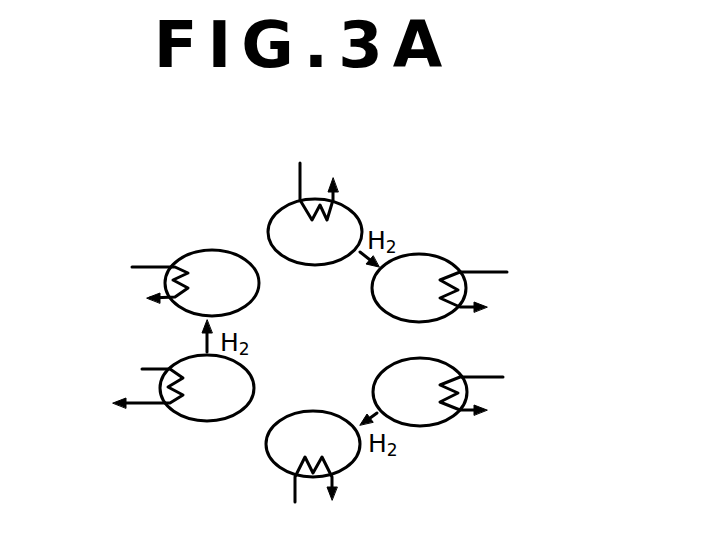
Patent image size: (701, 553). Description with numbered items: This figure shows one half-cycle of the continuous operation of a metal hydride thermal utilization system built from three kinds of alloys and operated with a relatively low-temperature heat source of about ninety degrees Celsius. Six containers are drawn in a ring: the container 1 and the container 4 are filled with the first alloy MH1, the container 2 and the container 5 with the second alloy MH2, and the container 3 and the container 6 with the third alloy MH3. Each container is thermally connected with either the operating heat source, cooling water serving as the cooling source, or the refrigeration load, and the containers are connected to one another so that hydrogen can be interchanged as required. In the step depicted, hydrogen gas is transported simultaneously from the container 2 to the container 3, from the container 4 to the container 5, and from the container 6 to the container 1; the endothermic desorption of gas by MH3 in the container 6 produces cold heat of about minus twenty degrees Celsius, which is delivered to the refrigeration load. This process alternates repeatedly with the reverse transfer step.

The container 1 is at (236, 250).
The container 2 is at (357, 209).
The container 3 is at (442, 254).
The container 4 is at (435, 425).
The container 5 is at (283, 468).
The container 6 is at (182, 418).